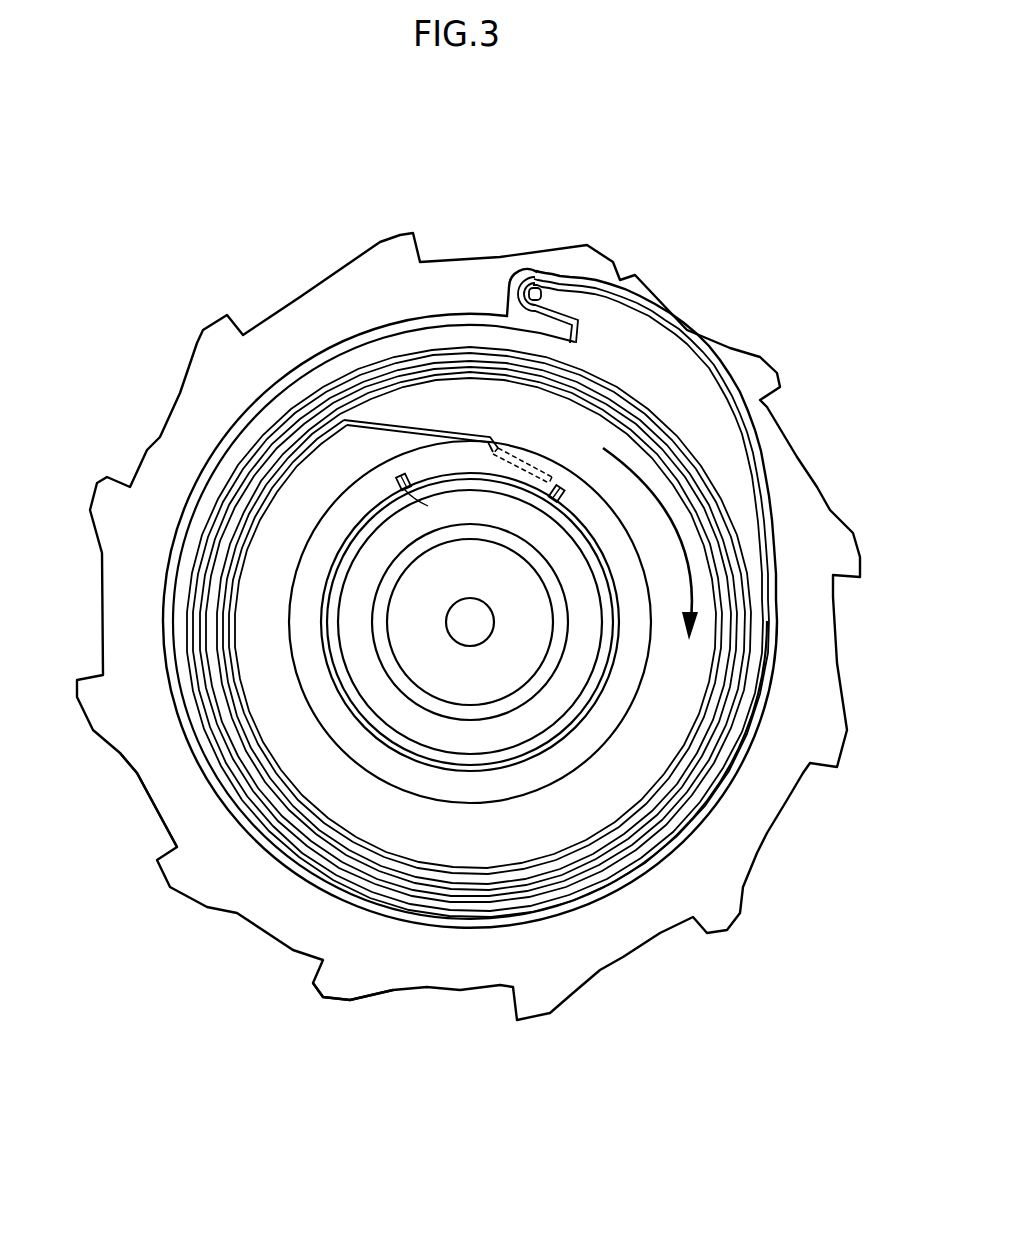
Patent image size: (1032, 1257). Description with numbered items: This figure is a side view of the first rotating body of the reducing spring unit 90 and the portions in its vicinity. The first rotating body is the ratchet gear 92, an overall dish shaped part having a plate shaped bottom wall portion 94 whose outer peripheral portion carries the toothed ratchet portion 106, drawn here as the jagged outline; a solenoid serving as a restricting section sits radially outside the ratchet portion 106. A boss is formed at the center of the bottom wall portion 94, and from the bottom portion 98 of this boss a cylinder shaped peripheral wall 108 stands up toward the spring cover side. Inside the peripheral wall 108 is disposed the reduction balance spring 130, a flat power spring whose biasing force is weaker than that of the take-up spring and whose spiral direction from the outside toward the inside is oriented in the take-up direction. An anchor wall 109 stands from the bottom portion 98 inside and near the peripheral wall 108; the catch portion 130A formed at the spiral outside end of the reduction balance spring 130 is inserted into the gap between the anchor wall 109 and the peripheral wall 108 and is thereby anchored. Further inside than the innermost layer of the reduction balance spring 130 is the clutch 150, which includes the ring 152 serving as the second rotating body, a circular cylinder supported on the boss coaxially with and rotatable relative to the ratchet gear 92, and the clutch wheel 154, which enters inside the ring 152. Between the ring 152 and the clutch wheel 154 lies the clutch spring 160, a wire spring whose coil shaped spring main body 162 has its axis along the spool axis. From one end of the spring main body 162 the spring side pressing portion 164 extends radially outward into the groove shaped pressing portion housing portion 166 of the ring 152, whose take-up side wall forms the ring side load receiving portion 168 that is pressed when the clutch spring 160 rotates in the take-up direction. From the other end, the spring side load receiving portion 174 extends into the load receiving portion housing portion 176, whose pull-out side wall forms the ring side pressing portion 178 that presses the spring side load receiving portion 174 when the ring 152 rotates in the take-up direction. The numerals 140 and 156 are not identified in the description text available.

The reducing spring unit 90 is at (642, 196).
The ratchet gear 92 is at (674, 309).
The bottom wall portion 94 is at (487, 330).
The bottom portion 98 is at (462, 850).
The ratchet portion 106 is at (370, 990).
The peripheral wall 108 is at (187, 757).
The anchor wall 109 is at (580, 300).
The reduction balance spring 130 is at (400, 348).
The catch portion 130A is at (533, 275).
The inner wall 140 is at (318, 400).
The clutch 150 is at (377, 806).
The ring 152 is at (317, 723).
The clutch wheel 154 is at (513, 733).
The holder body 156 is at (475, 729).
The clutch spring 160 is at (587, 671).
The spring main body 162 is at (572, 715).
The spring side pressing portion 164 is at (578, 505).
The pressing portion housing portion 166 is at (490, 445).
The ring side load receiving portion 168 is at (560, 487).
The spring side load receiving portion 174 is at (418, 493).
The load receiving portion housing portion 176 is at (400, 477).
The ring side pressing portion 178 is at (396, 490).